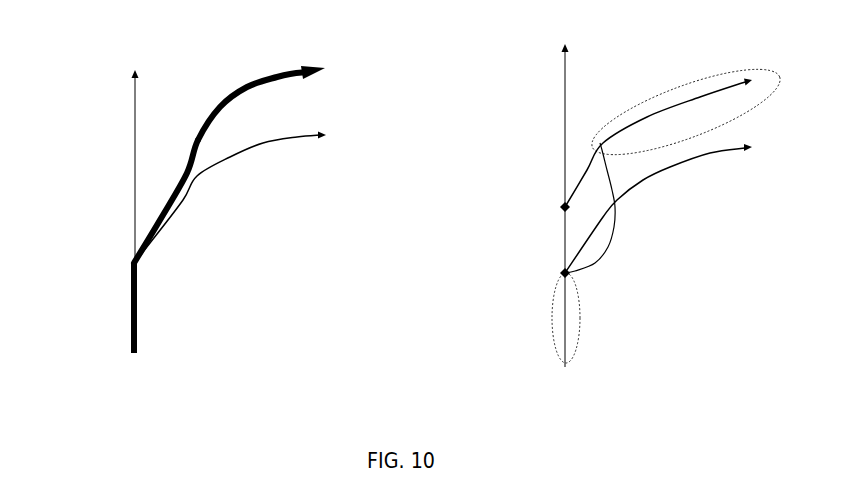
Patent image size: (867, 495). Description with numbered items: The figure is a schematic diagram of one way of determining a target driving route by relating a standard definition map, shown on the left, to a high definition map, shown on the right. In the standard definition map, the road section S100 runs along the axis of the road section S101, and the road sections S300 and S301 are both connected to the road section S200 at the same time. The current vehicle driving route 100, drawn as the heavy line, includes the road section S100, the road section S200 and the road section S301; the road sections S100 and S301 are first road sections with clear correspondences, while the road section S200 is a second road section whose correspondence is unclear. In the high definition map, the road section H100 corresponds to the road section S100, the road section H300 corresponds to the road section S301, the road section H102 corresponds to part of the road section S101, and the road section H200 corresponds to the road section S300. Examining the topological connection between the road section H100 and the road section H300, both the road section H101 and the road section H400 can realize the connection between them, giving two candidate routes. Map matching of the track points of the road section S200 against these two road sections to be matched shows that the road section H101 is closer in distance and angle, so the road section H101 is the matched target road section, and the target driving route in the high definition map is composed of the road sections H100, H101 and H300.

The road section S100 is at (96, 308).
The road section S101 is at (90, 211).
The road section S200 is at (182, 206).
The road section S300 is at (230, 198).
The road section S301 is at (261, 88).
The vehicle driving route 100 is at (290, 88).
The road section H100 is at (535, 318).
The road section H101 is at (528, 254).
The road section H102 is at (524, 205).
The road section H200 is at (661, 208).
The road section H300 is at (677, 130).
The road section H400 is at (622, 208).